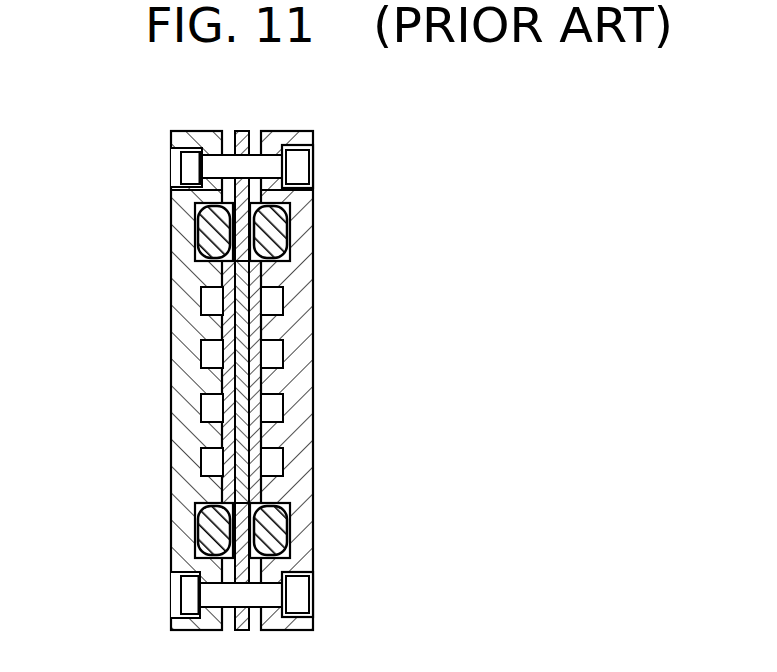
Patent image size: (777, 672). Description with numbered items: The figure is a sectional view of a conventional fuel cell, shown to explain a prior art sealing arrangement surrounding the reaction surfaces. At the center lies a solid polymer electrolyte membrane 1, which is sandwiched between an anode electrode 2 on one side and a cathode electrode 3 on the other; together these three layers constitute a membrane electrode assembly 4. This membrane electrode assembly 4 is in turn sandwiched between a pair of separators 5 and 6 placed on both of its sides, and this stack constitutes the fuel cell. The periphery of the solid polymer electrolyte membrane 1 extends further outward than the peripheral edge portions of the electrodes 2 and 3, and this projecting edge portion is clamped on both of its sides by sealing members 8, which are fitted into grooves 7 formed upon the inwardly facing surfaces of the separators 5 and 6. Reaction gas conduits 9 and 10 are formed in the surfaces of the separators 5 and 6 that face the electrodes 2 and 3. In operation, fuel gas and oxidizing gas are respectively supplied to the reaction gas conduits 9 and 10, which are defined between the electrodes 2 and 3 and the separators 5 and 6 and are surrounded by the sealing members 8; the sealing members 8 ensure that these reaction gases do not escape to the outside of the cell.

The solid polymer electrolyte membrane 1 is at (228, 266).
The anode electrode 2 is at (241, 300).
The cathode electrode 3 is at (255, 330).
The membrane electrode assembly 4 is at (142, 380).
The separator 5 is at (313, 437).
The separator 6 is at (171, 403).
The groove 7 is at (290, 228).
The sealing member 8 is at (245, 380).
The reaction gas conduit 9 is at (283, 357).
The reaction gas conduit 10 is at (212, 356).